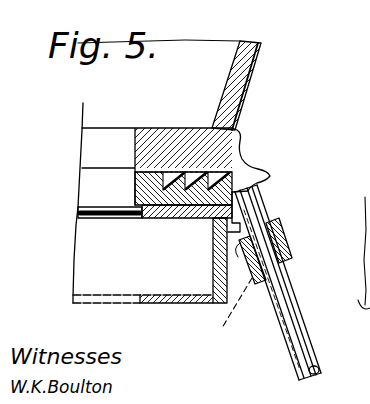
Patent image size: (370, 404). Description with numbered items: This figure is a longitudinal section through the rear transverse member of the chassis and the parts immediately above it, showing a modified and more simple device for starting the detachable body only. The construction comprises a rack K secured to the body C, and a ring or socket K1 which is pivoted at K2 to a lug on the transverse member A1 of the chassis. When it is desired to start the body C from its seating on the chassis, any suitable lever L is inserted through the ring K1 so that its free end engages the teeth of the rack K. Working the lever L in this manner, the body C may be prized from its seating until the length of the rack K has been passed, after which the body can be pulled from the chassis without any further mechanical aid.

The body C is at (230, 72).
The rack K is at (225, 180).
The ring or socket K1 is at (283, 232).
The pivot K2 is at (218, 330).
The lever L is at (295, 323).
The transverse member A1 is at (118, 297).